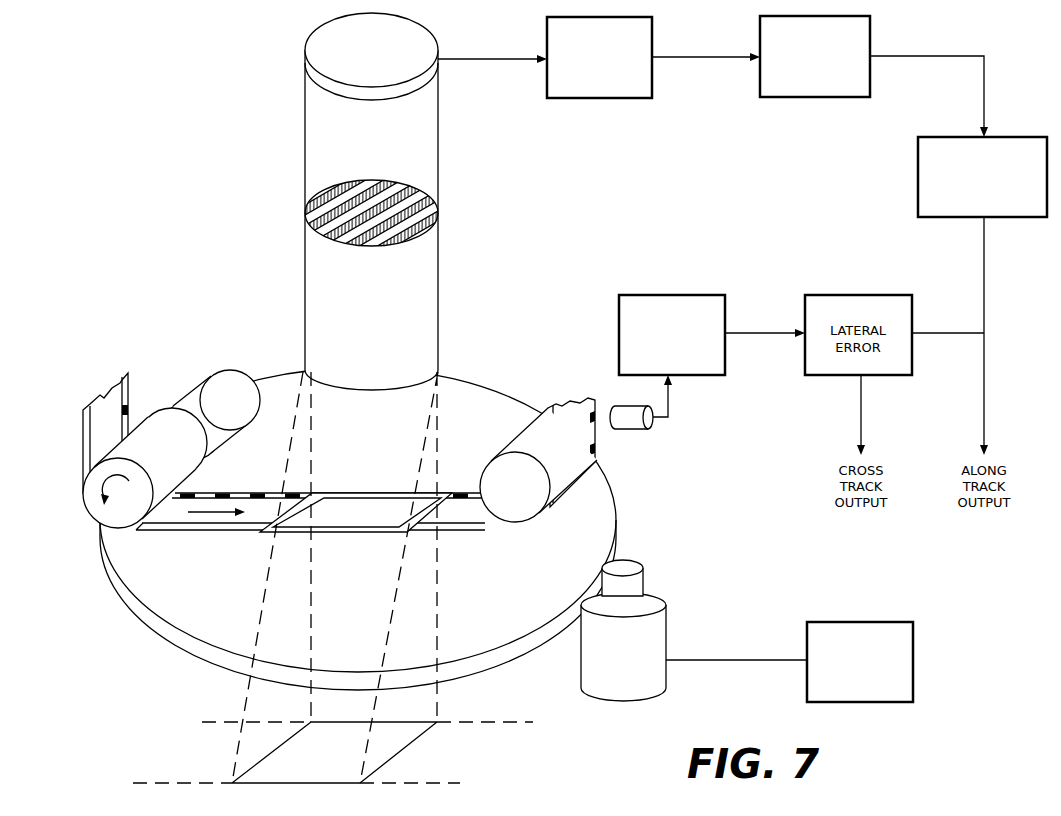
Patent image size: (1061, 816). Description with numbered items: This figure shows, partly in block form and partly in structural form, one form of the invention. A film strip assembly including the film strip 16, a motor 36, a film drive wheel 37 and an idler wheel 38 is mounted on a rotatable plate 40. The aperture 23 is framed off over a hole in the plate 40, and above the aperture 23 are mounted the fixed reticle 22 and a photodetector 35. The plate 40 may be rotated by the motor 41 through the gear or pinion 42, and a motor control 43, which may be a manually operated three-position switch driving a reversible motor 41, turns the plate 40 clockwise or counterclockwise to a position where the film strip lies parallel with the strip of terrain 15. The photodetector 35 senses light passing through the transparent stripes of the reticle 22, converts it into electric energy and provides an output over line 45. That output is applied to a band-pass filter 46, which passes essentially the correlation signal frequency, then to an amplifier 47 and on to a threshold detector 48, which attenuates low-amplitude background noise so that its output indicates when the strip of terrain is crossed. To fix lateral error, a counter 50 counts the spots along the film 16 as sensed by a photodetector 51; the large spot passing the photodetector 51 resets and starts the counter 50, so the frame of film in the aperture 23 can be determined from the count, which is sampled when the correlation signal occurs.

The strip of terrain 15 is at (470, 760).
The film strip 16 is at (478, 533).
The fixed reticle 22 is at (438, 214).
The aperture 23 is at (352, 503).
The photodetector 35 is at (383, 56).
The motor 36 is at (224, 372).
The film drive wheel 37 is at (83, 490).
The idler wheel 38 is at (491, 460).
The rotatable plate 40 is at (188, 585).
The motor 41 is at (668, 618).
The gear or pinion 42 is at (628, 558).
The motor control 43 is at (913, 664).
The line 45 is at (483, 56).
The band-pass filter 46 is at (600, 98).
The amplifier 47 is at (815, 97).
The threshold detector 48 is at (918, 180).
The counter 50 is at (619, 333).
The photodetector 51 is at (635, 430).